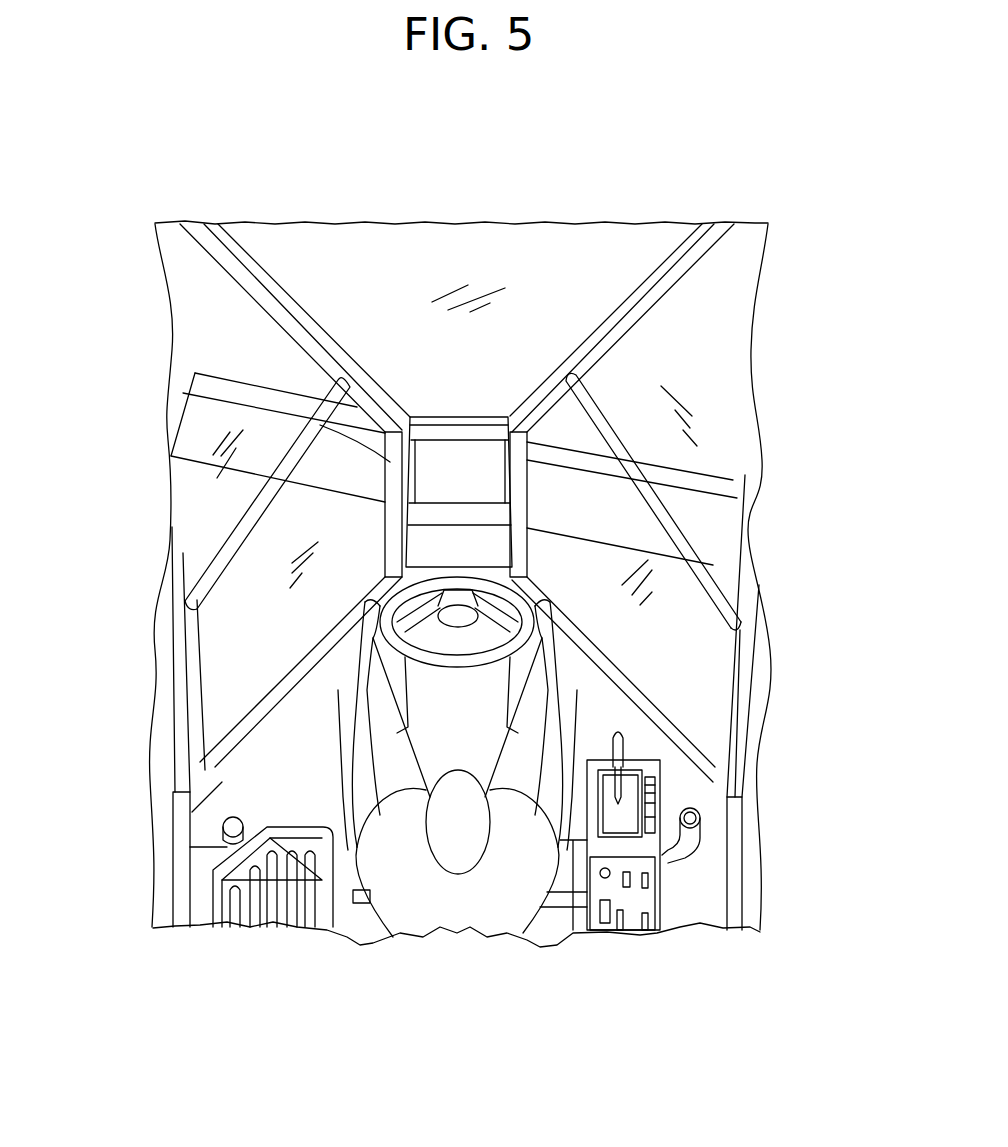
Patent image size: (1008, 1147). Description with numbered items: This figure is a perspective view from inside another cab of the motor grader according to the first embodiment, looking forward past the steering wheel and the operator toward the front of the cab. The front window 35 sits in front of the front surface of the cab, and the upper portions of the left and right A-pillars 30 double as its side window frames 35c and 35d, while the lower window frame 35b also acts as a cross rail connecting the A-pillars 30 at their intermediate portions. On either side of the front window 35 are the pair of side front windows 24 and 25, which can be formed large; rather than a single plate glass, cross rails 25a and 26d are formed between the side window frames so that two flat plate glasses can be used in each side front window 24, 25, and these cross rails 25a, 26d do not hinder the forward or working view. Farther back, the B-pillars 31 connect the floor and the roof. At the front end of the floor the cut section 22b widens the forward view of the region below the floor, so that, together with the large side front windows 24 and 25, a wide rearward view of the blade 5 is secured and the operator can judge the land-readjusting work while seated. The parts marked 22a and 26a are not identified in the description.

The blade 5 is at (733, 480).
The console pillar base 22a is at (535, 576).
The cut section 22b is at (227, 747).
The side front window 24 is at (213, 517).
The side front window 25 is at (683, 630).
The cross rail 25a is at (647, 470).
The window lower frame 26a is at (183, 613).
The cross rail 26d is at (225, 545).
The A-pillar 30 is at (385, 465).
The B-pillar 31 is at (167, 692).
The front window 35 is at (527, 280).
The lower window frame 35b is at (457, 432).
The side window frame 35c is at (273, 287).
The side window frame 35d is at (643, 287).